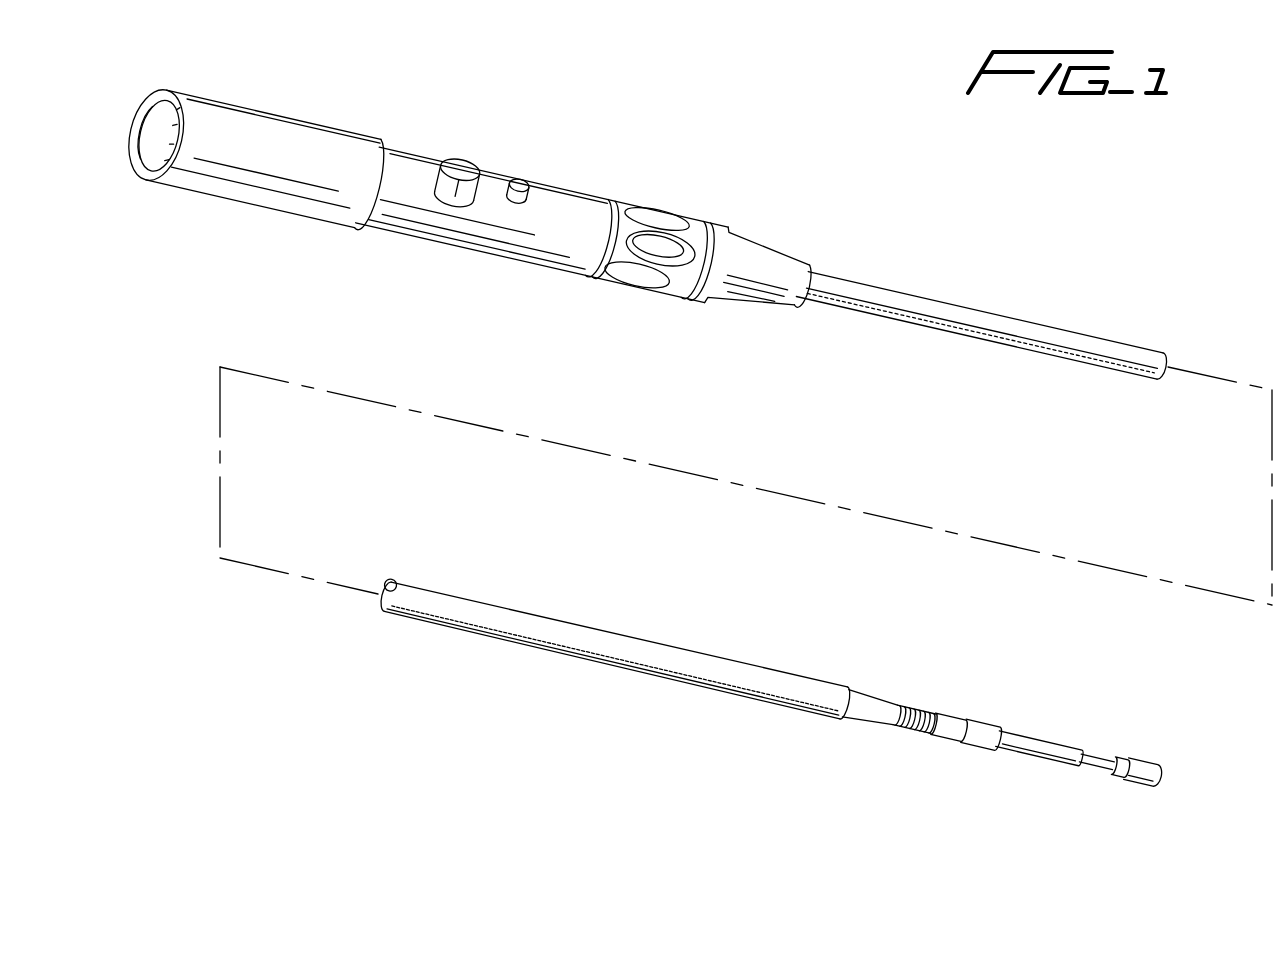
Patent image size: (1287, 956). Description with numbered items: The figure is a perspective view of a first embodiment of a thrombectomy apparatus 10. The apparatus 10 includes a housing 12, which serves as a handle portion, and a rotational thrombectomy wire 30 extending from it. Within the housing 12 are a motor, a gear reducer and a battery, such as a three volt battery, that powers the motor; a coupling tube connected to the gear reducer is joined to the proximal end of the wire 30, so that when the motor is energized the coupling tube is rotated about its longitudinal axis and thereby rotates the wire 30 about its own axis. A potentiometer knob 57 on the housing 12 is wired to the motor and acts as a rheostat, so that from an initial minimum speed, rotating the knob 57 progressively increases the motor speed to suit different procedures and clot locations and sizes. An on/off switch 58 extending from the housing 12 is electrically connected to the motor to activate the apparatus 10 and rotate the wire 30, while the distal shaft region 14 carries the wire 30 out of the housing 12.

The thrombectomy apparatus 10 is at (659, 106).
The housing 12 is at (534, 244).
The distal shaft assembly 14 is at (771, 208).
The rotational thrombectomy wire 30 is at (667, 660).
The potentiometer knob 57 is at (452, 160).
The on/off switch 58 is at (513, 180).